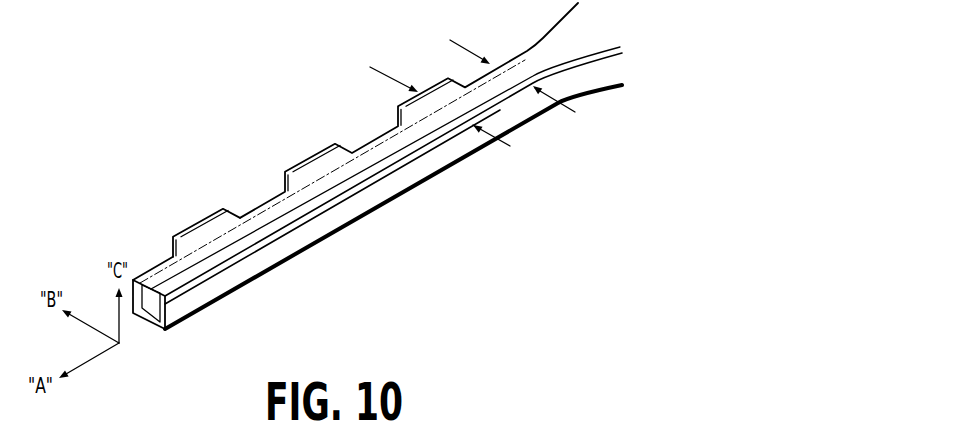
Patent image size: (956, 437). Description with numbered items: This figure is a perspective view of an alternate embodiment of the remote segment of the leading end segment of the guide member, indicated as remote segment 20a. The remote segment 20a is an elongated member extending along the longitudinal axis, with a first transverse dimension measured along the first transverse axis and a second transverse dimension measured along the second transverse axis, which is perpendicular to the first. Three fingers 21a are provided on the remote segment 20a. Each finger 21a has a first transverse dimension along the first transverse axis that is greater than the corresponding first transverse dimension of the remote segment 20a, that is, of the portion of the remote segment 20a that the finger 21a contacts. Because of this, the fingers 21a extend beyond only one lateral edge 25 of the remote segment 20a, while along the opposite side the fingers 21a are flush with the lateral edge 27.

The remote segment 20a is at (260, 95).
The finger 21a is at (197, 232).
The lateral edge 25 is at (273, 197).
The lateral edge 27 is at (265, 262).